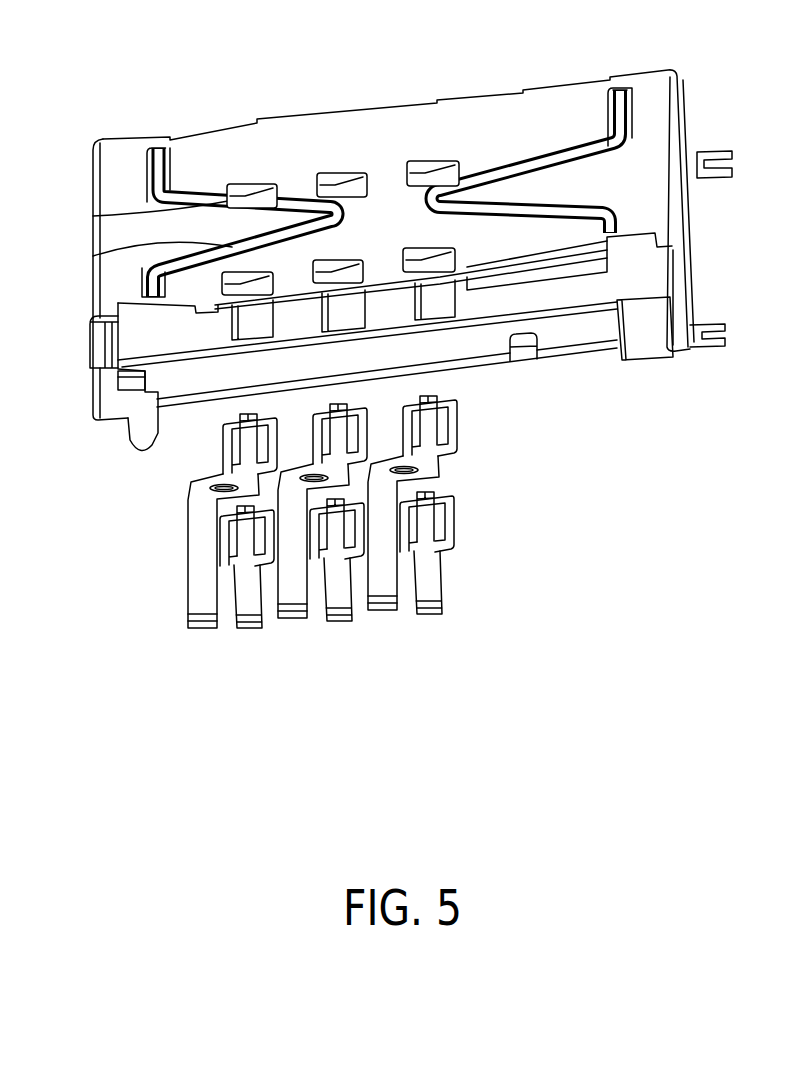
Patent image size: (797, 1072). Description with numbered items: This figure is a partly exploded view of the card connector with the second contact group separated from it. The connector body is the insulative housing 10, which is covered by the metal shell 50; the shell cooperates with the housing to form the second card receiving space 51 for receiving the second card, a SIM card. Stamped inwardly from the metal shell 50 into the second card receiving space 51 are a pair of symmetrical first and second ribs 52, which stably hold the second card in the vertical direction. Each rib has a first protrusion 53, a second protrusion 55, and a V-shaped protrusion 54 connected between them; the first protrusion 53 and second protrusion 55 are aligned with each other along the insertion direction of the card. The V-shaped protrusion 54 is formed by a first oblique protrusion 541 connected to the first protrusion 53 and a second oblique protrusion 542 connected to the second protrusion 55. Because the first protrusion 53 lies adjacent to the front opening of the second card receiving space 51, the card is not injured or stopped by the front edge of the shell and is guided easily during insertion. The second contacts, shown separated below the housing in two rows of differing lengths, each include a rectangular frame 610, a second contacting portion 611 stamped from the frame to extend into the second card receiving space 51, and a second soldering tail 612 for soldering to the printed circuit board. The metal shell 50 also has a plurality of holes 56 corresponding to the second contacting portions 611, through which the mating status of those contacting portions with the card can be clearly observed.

The insulative housing 10 is at (575, 337).
The metal shell 50 is at (437, 130).
The second card receiving space 51 is at (213, 327).
The first and second ribs 52 is at (159, 158).
The first protrusion 53 is at (150, 288).
The V-shaped protrusion 54 is at (535, 177).
The second protrusion 55 is at (157, 170).
The holes 56 is at (433, 177).
The first oblique protrusion 541 is at (93, 256).
The second oblique protrusion 542 is at (93, 216).
The rectangular frame 610 is at (371, 525).
The second contacting portion 611 is at (427, 417).
The second soldering tail 612 is at (440, 608).